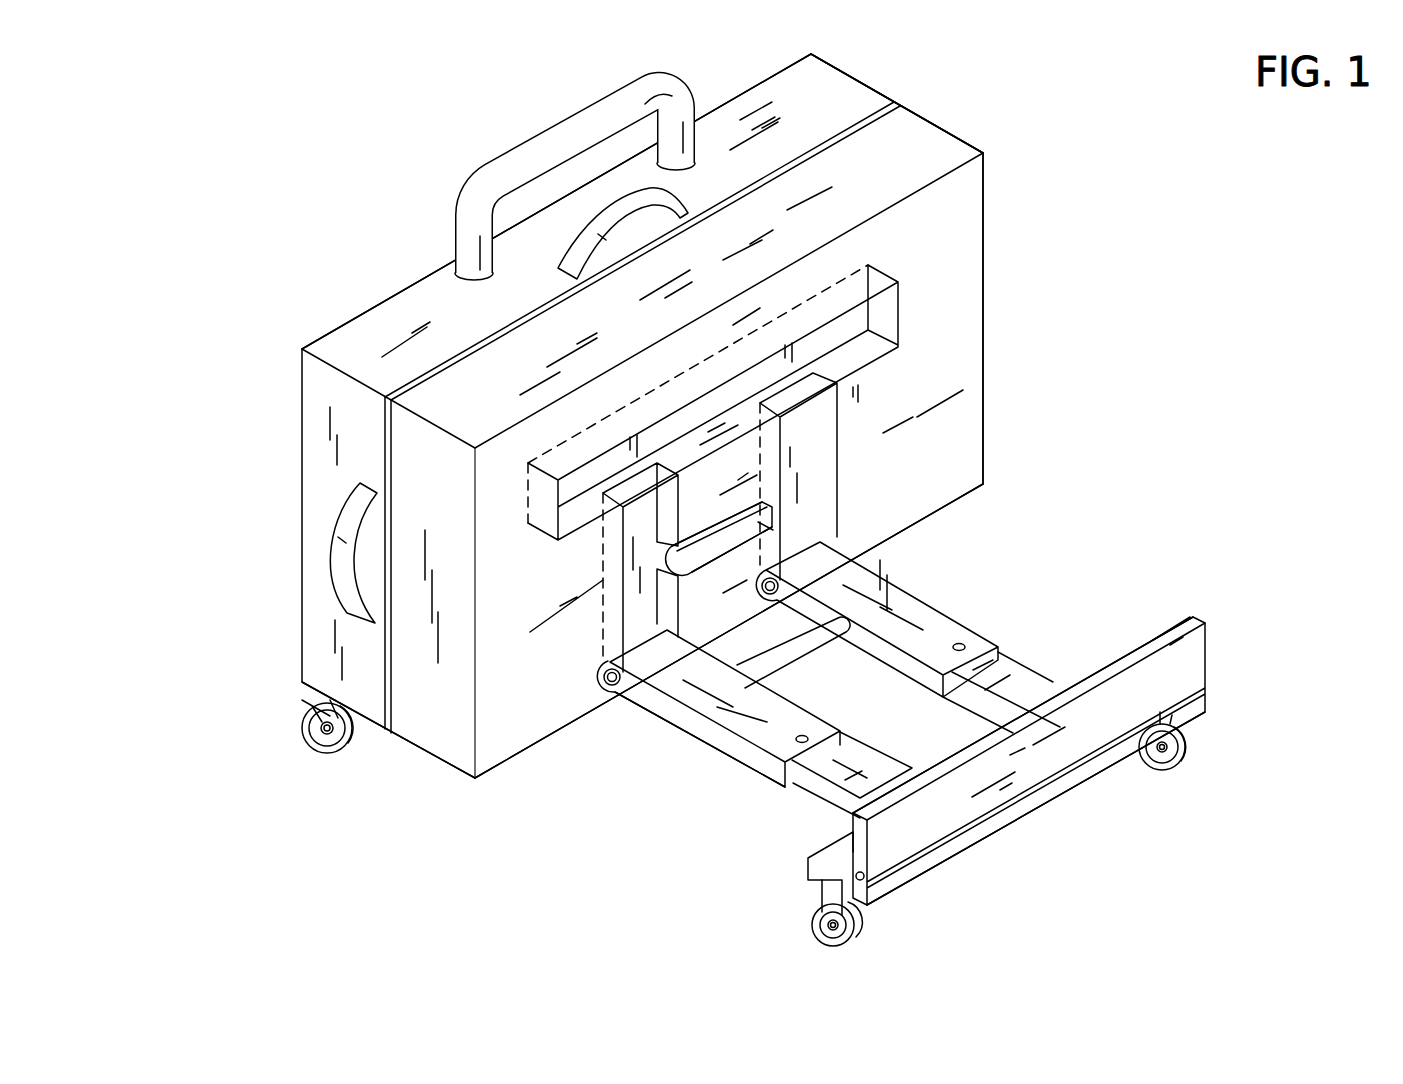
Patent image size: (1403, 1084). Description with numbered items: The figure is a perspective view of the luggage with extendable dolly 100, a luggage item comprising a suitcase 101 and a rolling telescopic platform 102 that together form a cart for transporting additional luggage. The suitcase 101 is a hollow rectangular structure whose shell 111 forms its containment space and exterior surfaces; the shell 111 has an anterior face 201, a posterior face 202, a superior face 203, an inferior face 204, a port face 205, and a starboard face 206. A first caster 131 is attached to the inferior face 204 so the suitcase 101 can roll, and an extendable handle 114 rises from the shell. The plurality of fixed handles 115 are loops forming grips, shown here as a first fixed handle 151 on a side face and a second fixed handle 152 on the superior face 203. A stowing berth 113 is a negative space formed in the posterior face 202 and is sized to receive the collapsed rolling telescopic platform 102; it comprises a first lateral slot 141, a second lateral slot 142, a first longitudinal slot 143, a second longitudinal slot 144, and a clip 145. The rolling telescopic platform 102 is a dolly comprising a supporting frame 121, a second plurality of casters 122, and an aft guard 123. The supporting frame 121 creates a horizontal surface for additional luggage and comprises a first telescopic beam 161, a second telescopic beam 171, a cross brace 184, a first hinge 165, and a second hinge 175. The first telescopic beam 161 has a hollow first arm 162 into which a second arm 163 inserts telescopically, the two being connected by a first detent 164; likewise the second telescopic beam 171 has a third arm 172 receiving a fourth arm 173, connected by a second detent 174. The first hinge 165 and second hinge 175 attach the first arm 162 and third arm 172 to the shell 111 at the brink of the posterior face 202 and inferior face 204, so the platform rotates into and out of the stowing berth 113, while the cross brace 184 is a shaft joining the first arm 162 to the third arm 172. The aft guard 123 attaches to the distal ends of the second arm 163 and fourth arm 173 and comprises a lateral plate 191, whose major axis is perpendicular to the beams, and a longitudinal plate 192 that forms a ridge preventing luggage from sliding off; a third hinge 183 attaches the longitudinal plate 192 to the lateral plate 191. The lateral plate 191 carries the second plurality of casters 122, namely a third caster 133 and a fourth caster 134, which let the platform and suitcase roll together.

The luggage with extendable dolly 100 is at (238, 163).
The suitcase 101 is at (947, 122).
The rolling telescopic platform 102 is at (1101, 715).
The shell 111 is at (823, 115).
The stowing berth 113 is at (897, 297).
The extendable handle 114 is at (667, 63).
The plurality of fixed handles 115 is at (412, 353).
The supporting frame 121 is at (965, 593).
The second plurality of casters 122 is at (873, 917).
The aft guard 123 is at (1207, 673).
The first caster 131 is at (310, 743).
The third caster 133 is at (857, 940).
The fourth caster 134 is at (1177, 758).
The first lateral slot 141 is at (807, 323).
The second lateral slot 142 is at (665, 544).
The first longitudinal slot 143 is at (613, 578).
The second longitudinal slot 144 is at (757, 510).
The clip 145 is at (770, 580).
The first fixed handle 151 is at (337, 523).
The second fixed handle 152 is at (627, 208).
The first telescopic beam 161 is at (718, 747).
The first arm 162 is at (677, 714).
The second arm 163 is at (825, 800).
The first detent 164 is at (795, 739).
The first hinge 165 is at (612, 688).
The second telescopic beam 171 is at (923, 601).
The third arm 172 is at (873, 570).
The fourth arm 173 is at (1013, 687).
The second detent 174 is at (960, 646).
The second hinge 175 is at (905, 422).
The third hinge 183 is at (857, 875).
The cross brace 184 is at (803, 658).
The lateral plate 191 is at (997, 820).
The longitudinal plate 192 is at (1183, 653).
The anterior face 201 is at (290, 392).
The posterior face 202 is at (490, 750).
The superior face 203 is at (927, 152).
The inferior face 204 is at (450, 792).
The port face 205 is at (317, 630).
The starboard face 206 is at (1005, 269).